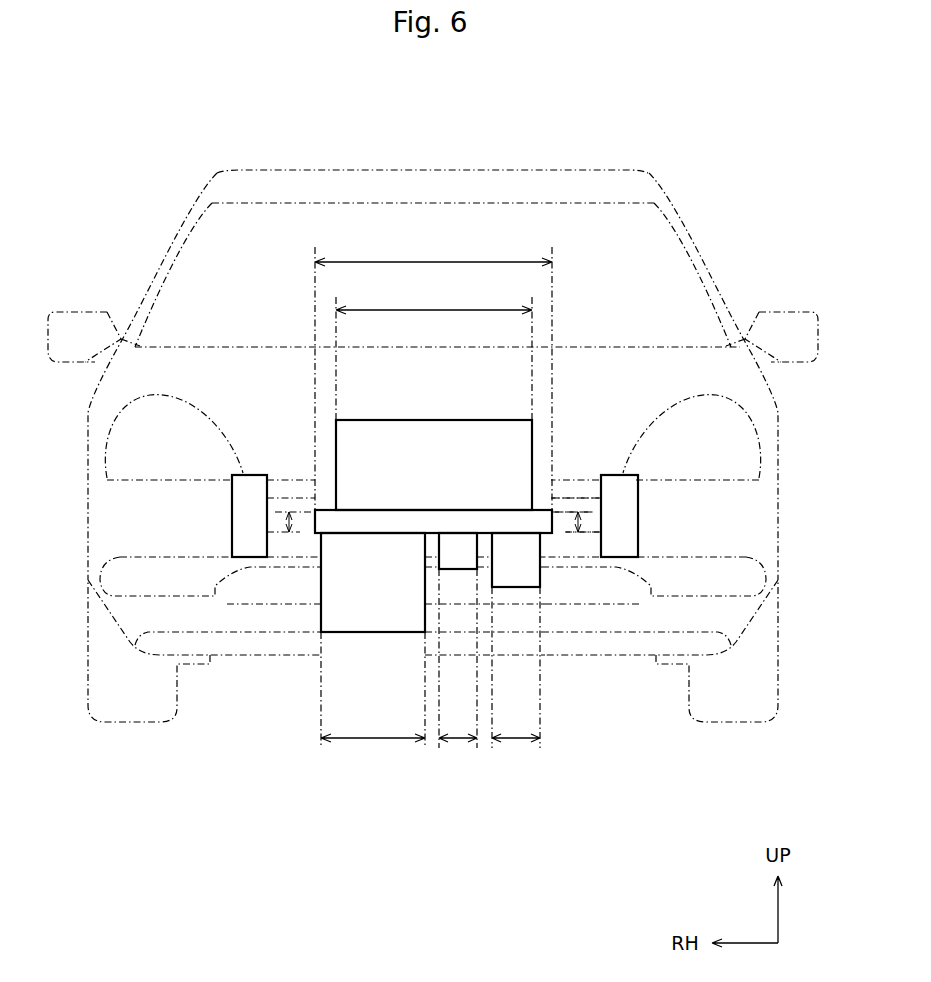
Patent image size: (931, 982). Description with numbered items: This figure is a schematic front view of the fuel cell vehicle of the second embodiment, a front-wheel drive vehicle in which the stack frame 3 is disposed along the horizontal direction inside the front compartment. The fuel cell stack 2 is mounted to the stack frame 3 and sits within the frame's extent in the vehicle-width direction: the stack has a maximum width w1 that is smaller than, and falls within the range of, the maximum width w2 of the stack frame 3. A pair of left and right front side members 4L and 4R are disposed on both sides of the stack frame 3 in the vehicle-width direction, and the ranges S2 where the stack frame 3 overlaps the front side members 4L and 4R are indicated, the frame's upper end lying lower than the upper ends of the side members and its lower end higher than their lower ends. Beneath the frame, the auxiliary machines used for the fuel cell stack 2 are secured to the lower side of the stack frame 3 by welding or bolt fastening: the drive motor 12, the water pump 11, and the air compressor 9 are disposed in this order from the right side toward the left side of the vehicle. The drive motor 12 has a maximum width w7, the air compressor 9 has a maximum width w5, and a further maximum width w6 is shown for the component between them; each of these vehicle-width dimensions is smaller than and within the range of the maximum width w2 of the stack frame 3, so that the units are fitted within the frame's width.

The fuel cell stack 2 is at (474, 432).
The stack frame 3 is at (375, 522).
The drive motor 12 is at (332, 593).
The water pump 11 is at (455, 560).
The air compressor 9 is at (533, 577).
The right front side member 4R is at (246, 505).
The left front side member 4L is at (624, 505).
The maximum width of the fuel cell stack in the vehicle-width direction w1 is at (434, 352).
The maximum width of the stack frame in the vehicle-width direction w2 is at (433, 373).
The maximum width of the air compressor in the vehicle-width direction w5 is at (516, 682).
The maximum width of the hydrogen circulation pump in the vehicle-width direction w6 is at (458, 673).
The maximum width of the drive motor in the vehicle-width direction w7 is at (373, 704).
The overlap range of the stack frame with the front side members S2 is at (289, 512).